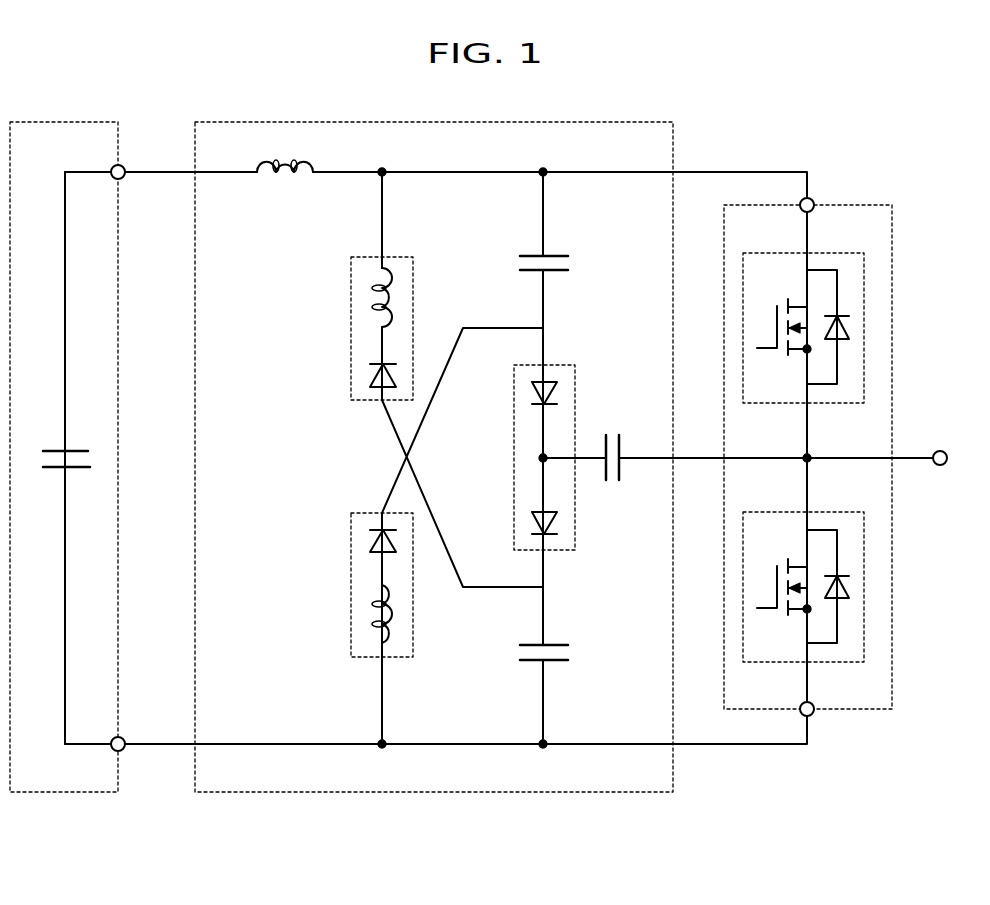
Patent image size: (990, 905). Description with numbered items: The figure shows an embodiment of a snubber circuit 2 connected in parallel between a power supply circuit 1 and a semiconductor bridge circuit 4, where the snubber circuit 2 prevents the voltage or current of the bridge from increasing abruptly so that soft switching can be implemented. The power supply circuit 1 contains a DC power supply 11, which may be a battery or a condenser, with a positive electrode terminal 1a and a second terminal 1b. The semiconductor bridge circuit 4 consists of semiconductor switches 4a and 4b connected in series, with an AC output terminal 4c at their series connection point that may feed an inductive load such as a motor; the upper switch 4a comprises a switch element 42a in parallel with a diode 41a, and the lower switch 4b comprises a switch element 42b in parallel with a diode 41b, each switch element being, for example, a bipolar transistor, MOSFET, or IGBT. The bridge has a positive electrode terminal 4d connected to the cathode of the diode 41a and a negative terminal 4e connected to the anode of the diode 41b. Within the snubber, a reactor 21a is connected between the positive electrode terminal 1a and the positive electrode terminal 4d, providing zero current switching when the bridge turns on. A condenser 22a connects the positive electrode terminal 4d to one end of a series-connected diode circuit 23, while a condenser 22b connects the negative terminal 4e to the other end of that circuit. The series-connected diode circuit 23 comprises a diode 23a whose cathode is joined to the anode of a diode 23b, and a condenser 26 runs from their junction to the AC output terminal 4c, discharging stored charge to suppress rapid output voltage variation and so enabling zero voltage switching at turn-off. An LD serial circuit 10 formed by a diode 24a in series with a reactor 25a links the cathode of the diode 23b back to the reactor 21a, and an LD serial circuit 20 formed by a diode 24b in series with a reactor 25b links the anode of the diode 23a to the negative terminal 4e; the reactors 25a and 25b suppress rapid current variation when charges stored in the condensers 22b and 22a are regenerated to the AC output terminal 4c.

The power supply circuit 1 is at (83, 123).
The positive electrode terminal 1a is at (122, 178).
The negative terminal 1b is at (122, 738).
The DC power supply 11 is at (78, 450).
The snubber circuit 2 is at (437, 123).
The reactor 21a is at (290, 180).
The LD serial circuit 10 is at (413, 268).
The LD serial circuit 20 is at (413, 645).
The reactor 25a is at (378, 288).
The reactor 25b is at (378, 607).
The diode 24a is at (375, 367).
The diode 24b is at (375, 535).
The condenser 22a is at (553, 255).
The condenser 22b is at (557, 645).
The series-connected diode circuit 23 is at (513, 457).
The diode 23a is at (553, 385).
The diode 23b is at (575, 525).
The condenser 26 is at (614, 433).
The semiconductor bridge circuit 4 is at (852, 205).
The semiconductor switch 4a is at (832, 253).
The semiconductor switch 4b is at (832, 512).
The AC output terminal 4c is at (940, 450).
The positive electrode terminal 4d is at (812, 200).
The negative terminal 4e is at (810, 716).
The diode 41a is at (851, 318).
The diode 41b is at (851, 578).
The switch element 42a is at (781, 353).
The switch element 42b is at (781, 612).